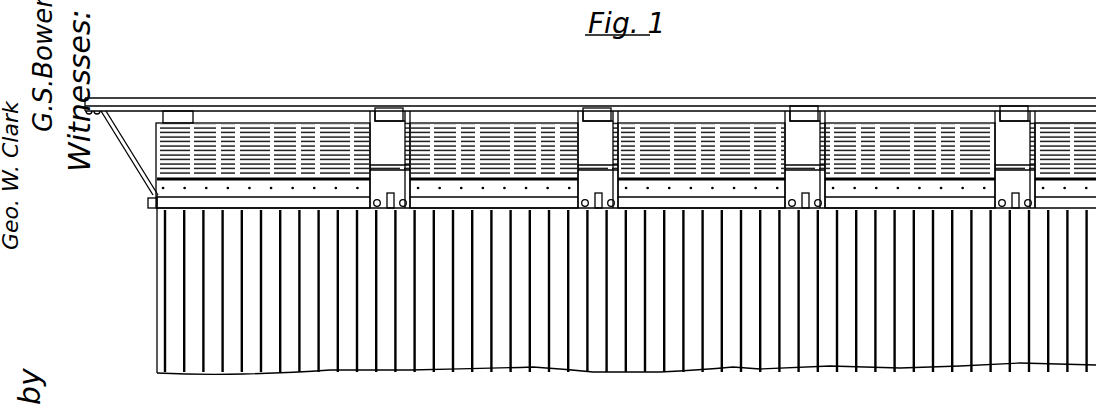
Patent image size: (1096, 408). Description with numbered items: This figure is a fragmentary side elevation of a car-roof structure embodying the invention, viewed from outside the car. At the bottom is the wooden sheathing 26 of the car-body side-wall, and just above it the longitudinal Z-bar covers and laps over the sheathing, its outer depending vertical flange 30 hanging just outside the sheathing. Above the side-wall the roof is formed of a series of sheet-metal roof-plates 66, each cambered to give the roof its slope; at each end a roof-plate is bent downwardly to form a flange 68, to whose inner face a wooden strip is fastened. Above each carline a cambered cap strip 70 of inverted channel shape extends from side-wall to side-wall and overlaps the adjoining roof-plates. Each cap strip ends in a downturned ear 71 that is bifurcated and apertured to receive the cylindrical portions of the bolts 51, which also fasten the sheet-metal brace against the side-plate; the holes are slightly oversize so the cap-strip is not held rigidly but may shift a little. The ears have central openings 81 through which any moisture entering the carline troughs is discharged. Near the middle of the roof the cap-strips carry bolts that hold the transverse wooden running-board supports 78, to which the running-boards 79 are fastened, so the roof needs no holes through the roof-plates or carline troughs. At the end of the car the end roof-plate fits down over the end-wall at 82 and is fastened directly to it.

The running-boards 79 is at (548, 98).
The running-board supports 78 is at (403, 113).
The end-wall attachment of end roof-plate 82 is at (156, 156).
The roof-plate 66 is at (626, 165).
The cap strip 70 is at (410, 156).
The downturned ear 71 is at (598, 190).
The bolts 51 is at (1002, 208).
The central openings 81 is at (393, 210).
The flange 68 is at (465, 195).
The outer depending vertical flange 30 is at (503, 208).
The sheathing 26 is at (826, 366).